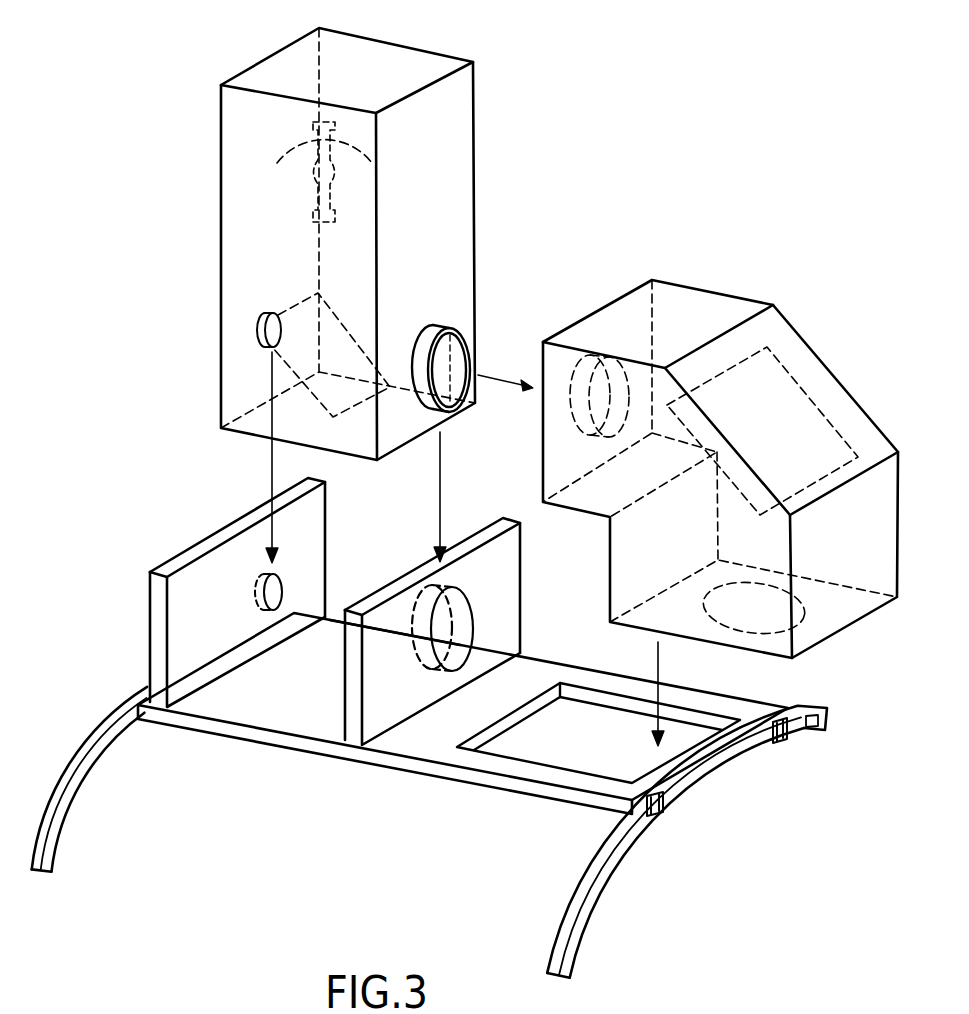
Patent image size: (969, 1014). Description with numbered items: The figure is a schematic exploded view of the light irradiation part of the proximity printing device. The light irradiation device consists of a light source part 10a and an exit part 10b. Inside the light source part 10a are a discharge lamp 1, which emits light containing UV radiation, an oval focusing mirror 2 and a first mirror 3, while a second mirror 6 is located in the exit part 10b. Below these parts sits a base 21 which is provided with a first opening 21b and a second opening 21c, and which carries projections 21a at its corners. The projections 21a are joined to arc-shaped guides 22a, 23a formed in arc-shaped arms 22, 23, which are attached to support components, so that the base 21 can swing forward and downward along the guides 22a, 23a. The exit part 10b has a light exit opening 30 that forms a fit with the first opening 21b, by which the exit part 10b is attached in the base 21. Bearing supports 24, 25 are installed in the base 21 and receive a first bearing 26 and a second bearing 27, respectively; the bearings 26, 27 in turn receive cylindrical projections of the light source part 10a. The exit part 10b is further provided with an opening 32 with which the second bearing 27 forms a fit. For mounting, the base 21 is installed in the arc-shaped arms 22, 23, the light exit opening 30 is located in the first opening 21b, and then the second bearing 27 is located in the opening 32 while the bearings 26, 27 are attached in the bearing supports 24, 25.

The light source part 10a is at (417, 43).
The exit part 10b is at (738, 293).
The discharge lamp 1 is at (310, 172).
The oval focusing mirror 2 is at (298, 143).
The first mirror 3 is at (315, 293).
The second mirror 6 is at (765, 377).
The first bearing 26 is at (262, 318).
The second bearing 27 is at (440, 328).
The opening 32 is at (595, 408).
The light exit opening 30 is at (842, 610).
The base 21 is at (410, 748).
The projection 21a is at (663, 815).
The first opening 21b is at (557, 753).
The second opening 21c is at (282, 695).
The arc-shaped arm 22 is at (70, 832).
The guide 22a is at (92, 755).
The arc-shaped arm 23 is at (788, 697).
The guide 23a is at (702, 770).
The bearing support 24 is at (158, 698).
The bearing support 25 is at (352, 738).